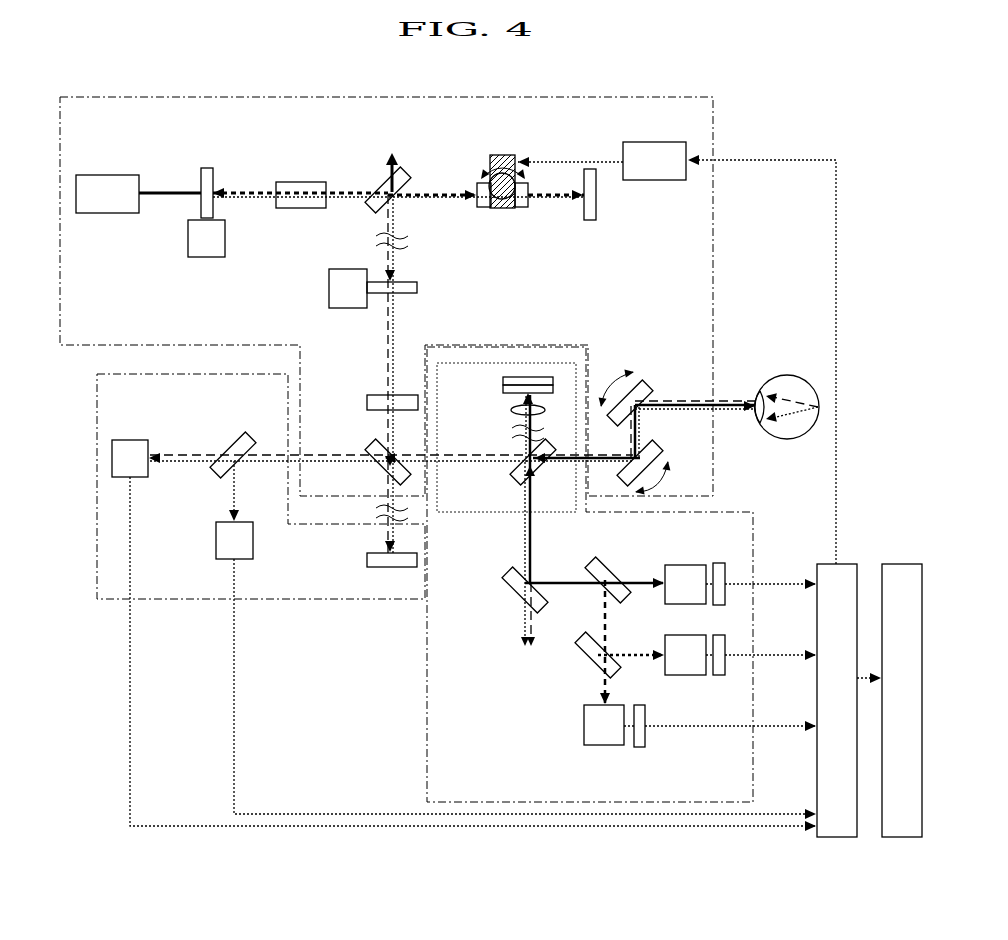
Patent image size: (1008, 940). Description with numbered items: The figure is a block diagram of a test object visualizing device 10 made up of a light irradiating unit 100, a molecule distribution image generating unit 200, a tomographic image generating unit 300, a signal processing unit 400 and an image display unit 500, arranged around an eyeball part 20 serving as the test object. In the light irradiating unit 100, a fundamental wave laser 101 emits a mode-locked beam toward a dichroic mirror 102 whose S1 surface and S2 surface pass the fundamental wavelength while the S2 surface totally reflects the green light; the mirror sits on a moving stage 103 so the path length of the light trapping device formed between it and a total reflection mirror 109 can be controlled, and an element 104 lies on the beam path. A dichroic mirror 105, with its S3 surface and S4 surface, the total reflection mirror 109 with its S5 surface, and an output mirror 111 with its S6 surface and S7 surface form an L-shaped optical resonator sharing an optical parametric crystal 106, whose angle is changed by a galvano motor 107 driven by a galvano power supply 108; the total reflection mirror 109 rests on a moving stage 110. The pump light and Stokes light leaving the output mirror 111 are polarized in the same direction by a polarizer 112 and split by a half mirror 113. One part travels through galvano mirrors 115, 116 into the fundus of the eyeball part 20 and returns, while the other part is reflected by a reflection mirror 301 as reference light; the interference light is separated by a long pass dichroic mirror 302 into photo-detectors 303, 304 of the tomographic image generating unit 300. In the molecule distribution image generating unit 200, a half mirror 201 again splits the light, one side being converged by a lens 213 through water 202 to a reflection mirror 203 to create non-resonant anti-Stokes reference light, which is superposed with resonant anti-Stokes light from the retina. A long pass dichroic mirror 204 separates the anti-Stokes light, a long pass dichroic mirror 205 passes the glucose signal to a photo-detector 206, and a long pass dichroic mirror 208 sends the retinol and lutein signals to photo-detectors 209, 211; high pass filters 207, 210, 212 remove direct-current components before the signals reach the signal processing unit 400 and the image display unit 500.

The test object visualizing device 10 is at (797, 107).
The eyeball part 20 is at (790, 439).
The light irradiating unit 100 is at (58, 318).
The fundamental wave laser 101 is at (107, 175).
The dichroic mirror 102 is at (206, 168).
The moving stage 103 is at (205, 258).
The optical element 104 is at (300, 182).
The dichroic mirror 105 is at (400, 173).
The optical parametric crystal 106 is at (518, 208).
The galvano motor 107 is at (502, 155).
The galvano power supply 108 is at (640, 182).
The total reflection mirror 109 is at (592, 222).
The moving stage 110 is at (345, 268).
The output mirror 111 is at (418, 287).
The polarizer 112 is at (367, 403).
The half mirror 113 is at (365, 452).
The galvano mirror 115 is at (660, 446).
The galvano mirror 116 is at (652, 386).
The molecule distribution image generating unit 200 is at (427, 705).
The half mirror 201 is at (513, 475).
The water 202 is at (503, 389).
The reflection mirror 203 is at (503, 380).
The long pass dichroic mirror 204 is at (512, 570).
The long pass dichroic mirror 205 is at (600, 563).
The photo-detector 206 is at (675, 565).
The high pass filter 207 is at (718, 563).
The long pass dichroic mirror 208 is at (590, 640).
The photo-detector 209 is at (672, 676).
The high pass filter 210 is at (718, 676).
The photo-detector 211 is at (592, 746).
The high pass filter 212 is at (639, 748).
The lens 213 is at (511, 410).
The tomographic image generating unit 300 is at (96, 398).
The reflection mirror 301 is at (367, 560).
The long pass dichroic mirror 302 is at (246, 435).
The photo-detector 303 is at (130, 440).
The photo-detector 304 is at (216, 540).
The signal processing unit 400 is at (837, 838).
The image display unit 500 is at (906, 838).
The S1 surface S1 is at (200, 176).
The S2 surface S2 is at (215, 178).
The S3 surface S3 is at (378, 185).
The S4 surface S4 is at (397, 206).
The S5 surface S5 is at (568, 208).
The S6 surface S6 is at (403, 278).
The S7 surface S7 is at (403, 297).